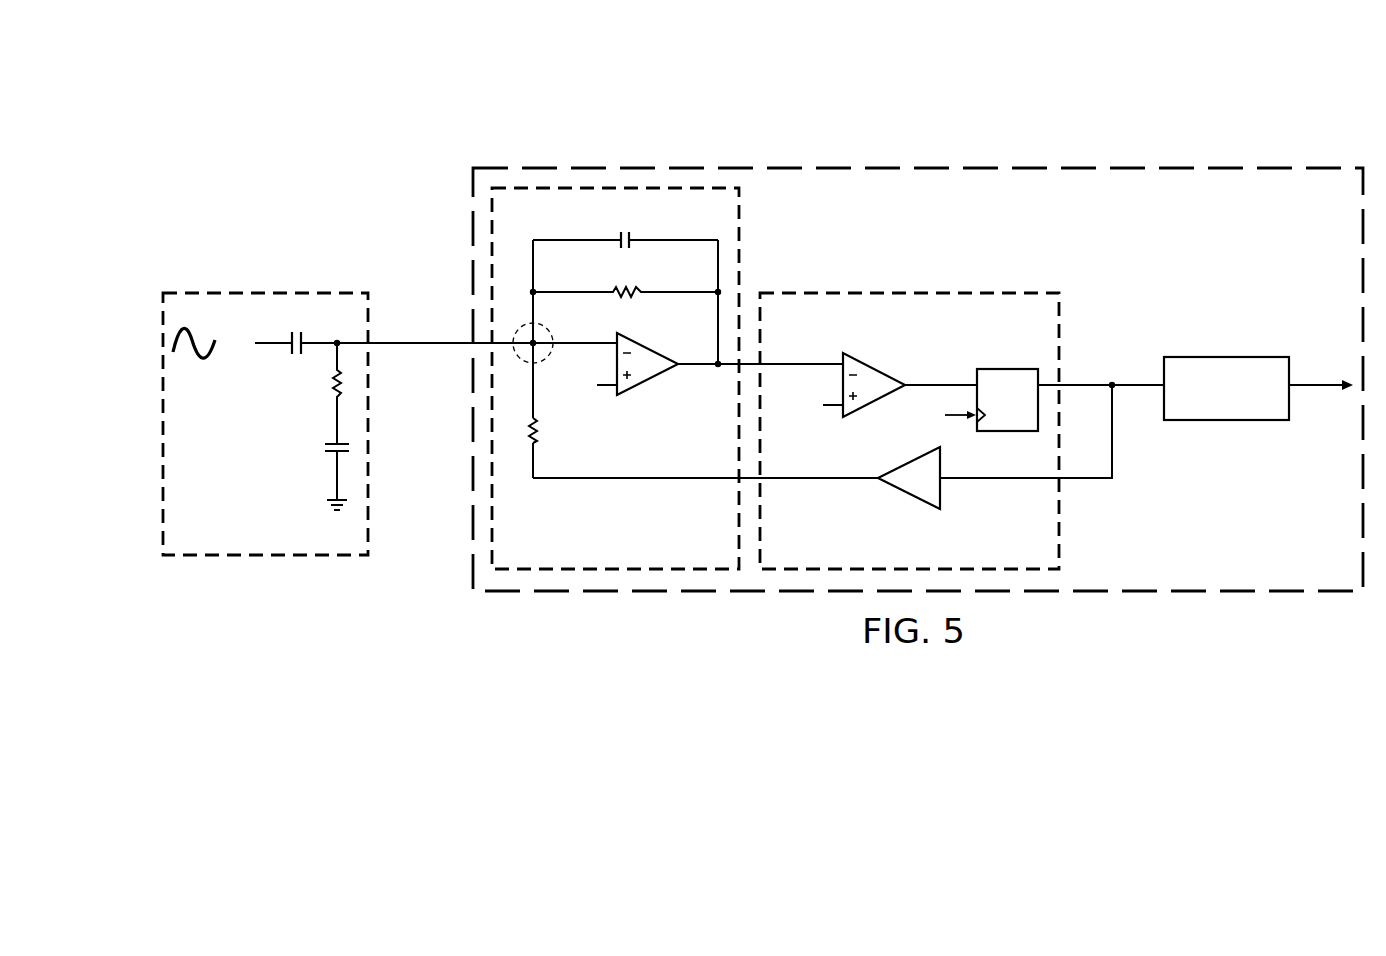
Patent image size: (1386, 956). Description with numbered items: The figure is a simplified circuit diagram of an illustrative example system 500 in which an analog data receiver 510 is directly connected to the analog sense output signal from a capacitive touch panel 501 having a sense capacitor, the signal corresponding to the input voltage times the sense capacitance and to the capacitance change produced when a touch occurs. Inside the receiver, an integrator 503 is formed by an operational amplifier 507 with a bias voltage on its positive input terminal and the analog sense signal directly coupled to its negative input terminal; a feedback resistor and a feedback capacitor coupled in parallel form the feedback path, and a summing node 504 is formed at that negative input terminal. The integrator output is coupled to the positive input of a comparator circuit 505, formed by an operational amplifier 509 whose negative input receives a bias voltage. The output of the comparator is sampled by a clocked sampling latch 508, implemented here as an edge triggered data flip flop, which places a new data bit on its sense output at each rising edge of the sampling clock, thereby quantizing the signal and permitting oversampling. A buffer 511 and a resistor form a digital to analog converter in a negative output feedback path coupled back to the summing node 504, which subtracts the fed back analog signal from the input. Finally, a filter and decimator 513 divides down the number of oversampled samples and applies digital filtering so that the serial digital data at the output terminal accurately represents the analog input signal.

The system 500 is at (388, 118).
The capacitive touch panel 501 is at (151, 426).
The integrator 503 is at (656, 378).
The summing node 504 is at (555, 330).
The comparator circuit 505 is at (909, 401).
The operational amplifier 507 is at (648, 350).
The clocked sampling latch 508 is at (1005, 369).
The operational amplifier 509 is at (871, 366).
The analog data receiver 510 is at (1067, 161).
The buffer 511 is at (907, 494).
The filter and decimator 513 is at (1228, 357).